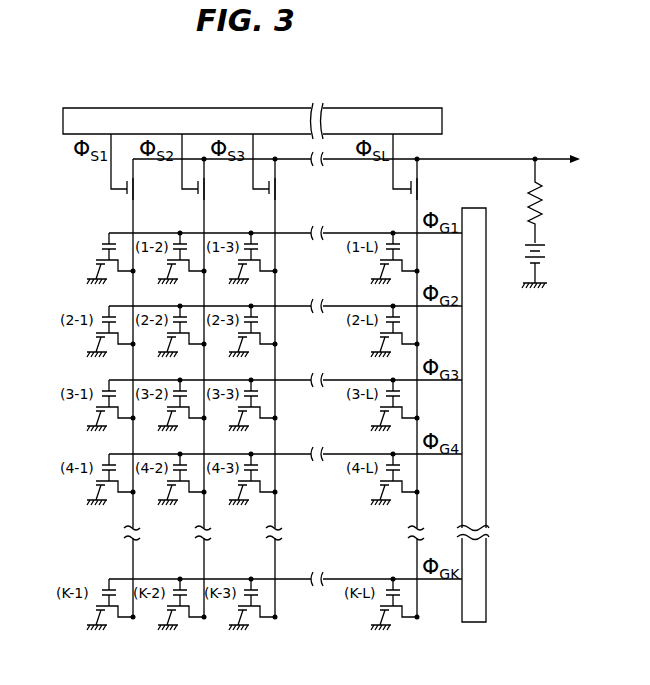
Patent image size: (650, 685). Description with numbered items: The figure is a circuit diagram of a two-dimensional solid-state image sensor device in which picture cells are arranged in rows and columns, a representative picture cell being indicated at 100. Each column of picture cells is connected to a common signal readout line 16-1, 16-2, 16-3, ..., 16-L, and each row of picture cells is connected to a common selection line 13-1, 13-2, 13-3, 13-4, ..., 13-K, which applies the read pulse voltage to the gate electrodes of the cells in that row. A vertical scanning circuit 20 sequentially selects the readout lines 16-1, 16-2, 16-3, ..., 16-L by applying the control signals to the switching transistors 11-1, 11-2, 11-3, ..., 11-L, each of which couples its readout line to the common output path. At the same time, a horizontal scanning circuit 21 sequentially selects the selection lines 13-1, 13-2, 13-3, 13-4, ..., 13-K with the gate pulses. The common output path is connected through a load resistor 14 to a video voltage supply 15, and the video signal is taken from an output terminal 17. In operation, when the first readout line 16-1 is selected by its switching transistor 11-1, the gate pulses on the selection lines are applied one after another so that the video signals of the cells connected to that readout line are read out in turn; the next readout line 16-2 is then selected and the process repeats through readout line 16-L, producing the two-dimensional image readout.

The vertical scanning circuit 20 is at (285, 107).
The output terminal 17 is at (573, 160).
The load resistor 14 is at (548, 198).
The video voltage supply 15 is at (546, 271).
The horizontal scanning circuit 21 is at (488, 484).
The picture element cell 100 is at (91, 265).
The switching transistor 11-1 is at (139, 167).
The switching transistor 11-2 is at (211, 167).
The switching transistor 11-3 is at (282, 167).
The switching transistor 11-L is at (424, 167).
The signal readout line 16-1 is at (135, 213).
The signal readout line 16-2 is at (206, 213).
The signal readout line 16-3 is at (277, 213).
The signal readout line 16-L is at (416, 215).
The selection line 13-1 is at (300, 234).
The selection line 13-2 is at (300, 306).
The selection line 13-3 is at (300, 380).
The selection line 13-4 is at (300, 454).
The selection line 13-K is at (300, 579).